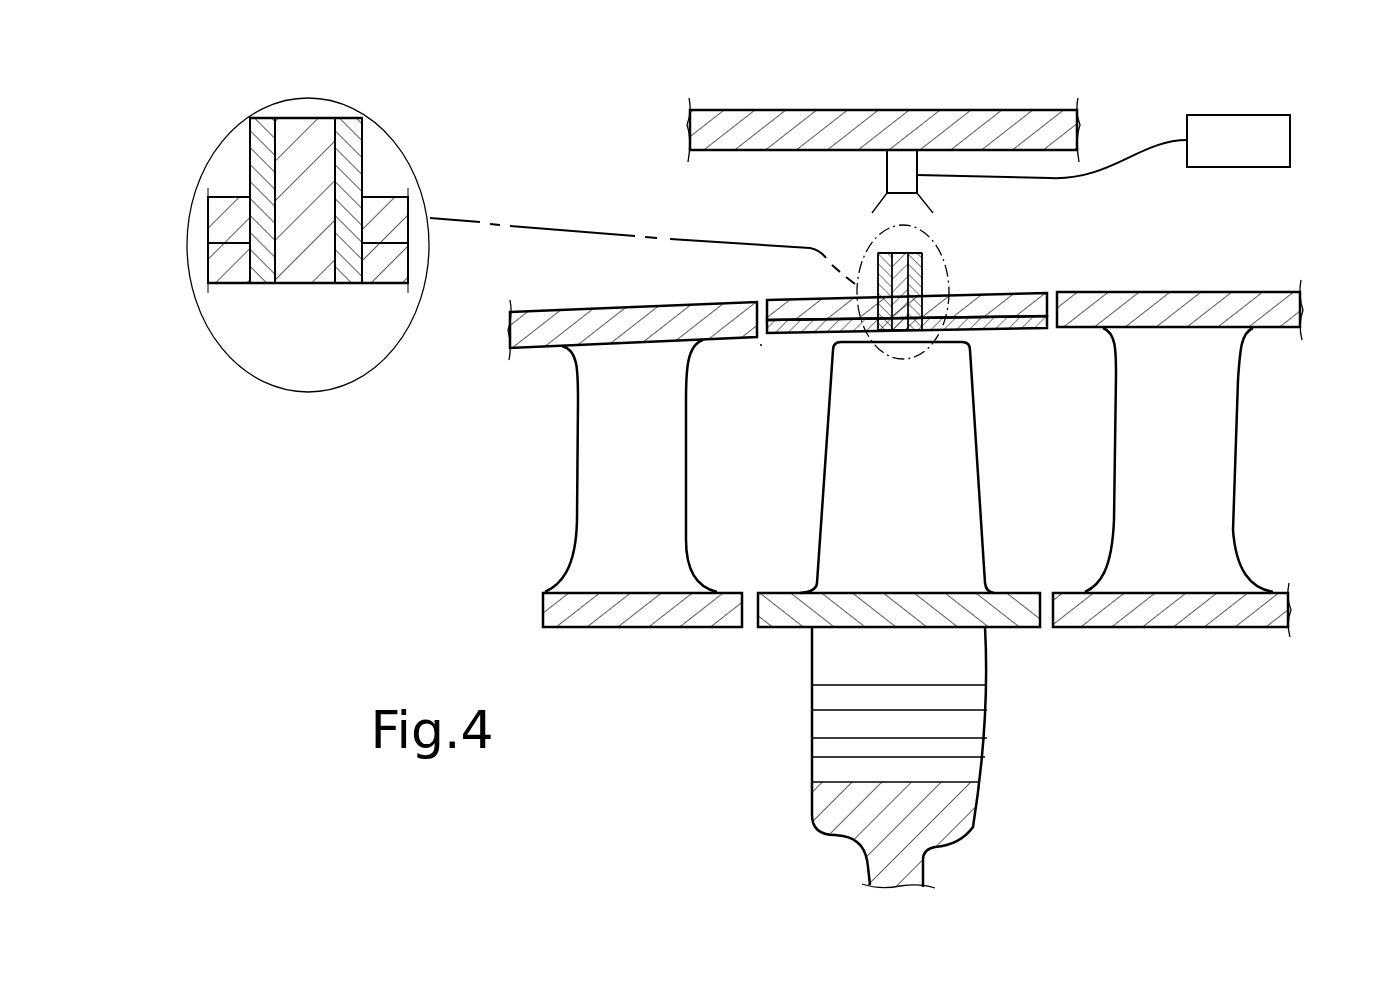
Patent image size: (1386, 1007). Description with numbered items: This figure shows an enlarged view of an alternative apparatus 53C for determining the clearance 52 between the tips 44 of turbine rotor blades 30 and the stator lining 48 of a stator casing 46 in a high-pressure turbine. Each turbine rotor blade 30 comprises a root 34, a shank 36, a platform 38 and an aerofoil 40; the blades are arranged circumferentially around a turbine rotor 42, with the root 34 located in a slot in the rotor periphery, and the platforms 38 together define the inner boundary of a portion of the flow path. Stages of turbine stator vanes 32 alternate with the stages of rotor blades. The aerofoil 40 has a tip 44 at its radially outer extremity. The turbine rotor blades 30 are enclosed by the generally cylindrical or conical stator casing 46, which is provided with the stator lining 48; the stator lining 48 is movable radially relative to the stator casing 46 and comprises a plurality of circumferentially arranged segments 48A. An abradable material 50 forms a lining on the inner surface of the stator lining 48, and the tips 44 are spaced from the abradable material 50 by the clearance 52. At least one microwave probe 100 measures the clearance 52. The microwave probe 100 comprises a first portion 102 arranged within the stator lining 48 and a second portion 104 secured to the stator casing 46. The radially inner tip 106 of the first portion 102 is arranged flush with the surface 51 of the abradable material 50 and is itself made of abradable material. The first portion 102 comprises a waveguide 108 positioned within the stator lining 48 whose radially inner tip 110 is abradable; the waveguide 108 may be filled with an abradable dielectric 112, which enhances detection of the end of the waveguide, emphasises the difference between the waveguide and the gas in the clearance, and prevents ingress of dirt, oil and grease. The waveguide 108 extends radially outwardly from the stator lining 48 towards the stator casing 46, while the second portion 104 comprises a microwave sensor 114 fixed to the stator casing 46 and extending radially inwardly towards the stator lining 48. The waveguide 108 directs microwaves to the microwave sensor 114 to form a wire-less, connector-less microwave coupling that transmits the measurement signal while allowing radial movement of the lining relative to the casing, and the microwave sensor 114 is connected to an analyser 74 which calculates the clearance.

The turbine rotor blade 30 is at (927, 467).
The turbine stator vane 32 is at (593, 532).
The root 34 is at (958, 728).
The shank 36 is at (953, 664).
The platform 38 is at (997, 612).
The aerofoil 40 is at (935, 458).
The turbine rotor 42 is at (952, 825).
The tip 44 is at (960, 337).
The stator casing 46 is at (997, 123).
The stator lining 48 is at (1050, 290).
The segment 48A is at (1000, 292).
The abradable material 50 is at (797, 338).
The surface 51 is at (815, 340).
The clearance 52 is at (950, 333).
The apparatus for determining the clearance 53C is at (1068, 80).
The analyser 74 is at (1103, 146).
The microwave probe 100 is at (574, 254).
The first portion 102 is at (920, 282).
The second portion 104 is at (837, 144).
The radially inner tip 106 is at (900, 337).
The waveguide 108 is at (877, 300).
The radially inner tip of the waveguide 110 is at (875, 335).
The dielectric 112 is at (903, 263).
The microwave sensor 114 is at (898, 177).